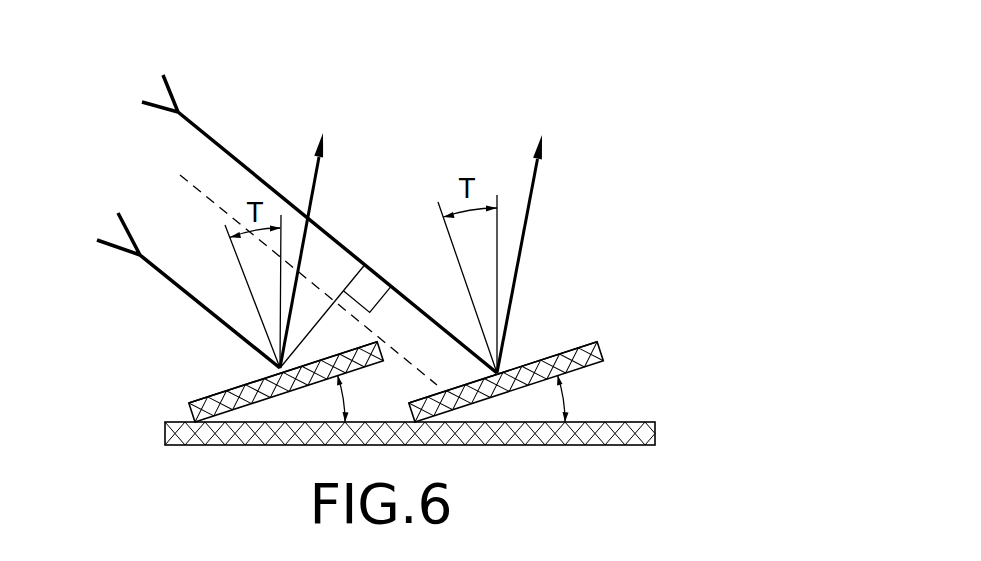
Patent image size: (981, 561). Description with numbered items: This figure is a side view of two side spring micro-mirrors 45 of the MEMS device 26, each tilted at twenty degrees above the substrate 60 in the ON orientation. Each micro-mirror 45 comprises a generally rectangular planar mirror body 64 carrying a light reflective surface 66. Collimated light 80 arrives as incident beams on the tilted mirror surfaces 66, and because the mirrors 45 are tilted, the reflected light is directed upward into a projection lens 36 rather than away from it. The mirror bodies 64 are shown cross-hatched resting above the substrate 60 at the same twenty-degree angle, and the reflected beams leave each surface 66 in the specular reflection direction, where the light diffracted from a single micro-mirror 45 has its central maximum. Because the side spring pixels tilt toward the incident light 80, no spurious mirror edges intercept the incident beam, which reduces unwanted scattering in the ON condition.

The optical reflector arrangement 26 is at (645, 228).
The projection lens 36 is at (335, 117).
The side spring micro-mirror 45 is at (394, 340).
The substrate 60 is at (652, 428).
The mirror body 64 is at (381, 345).
The light reflective surface 66 is at (237, 381).
The collimated light 80 is at (212, 137).